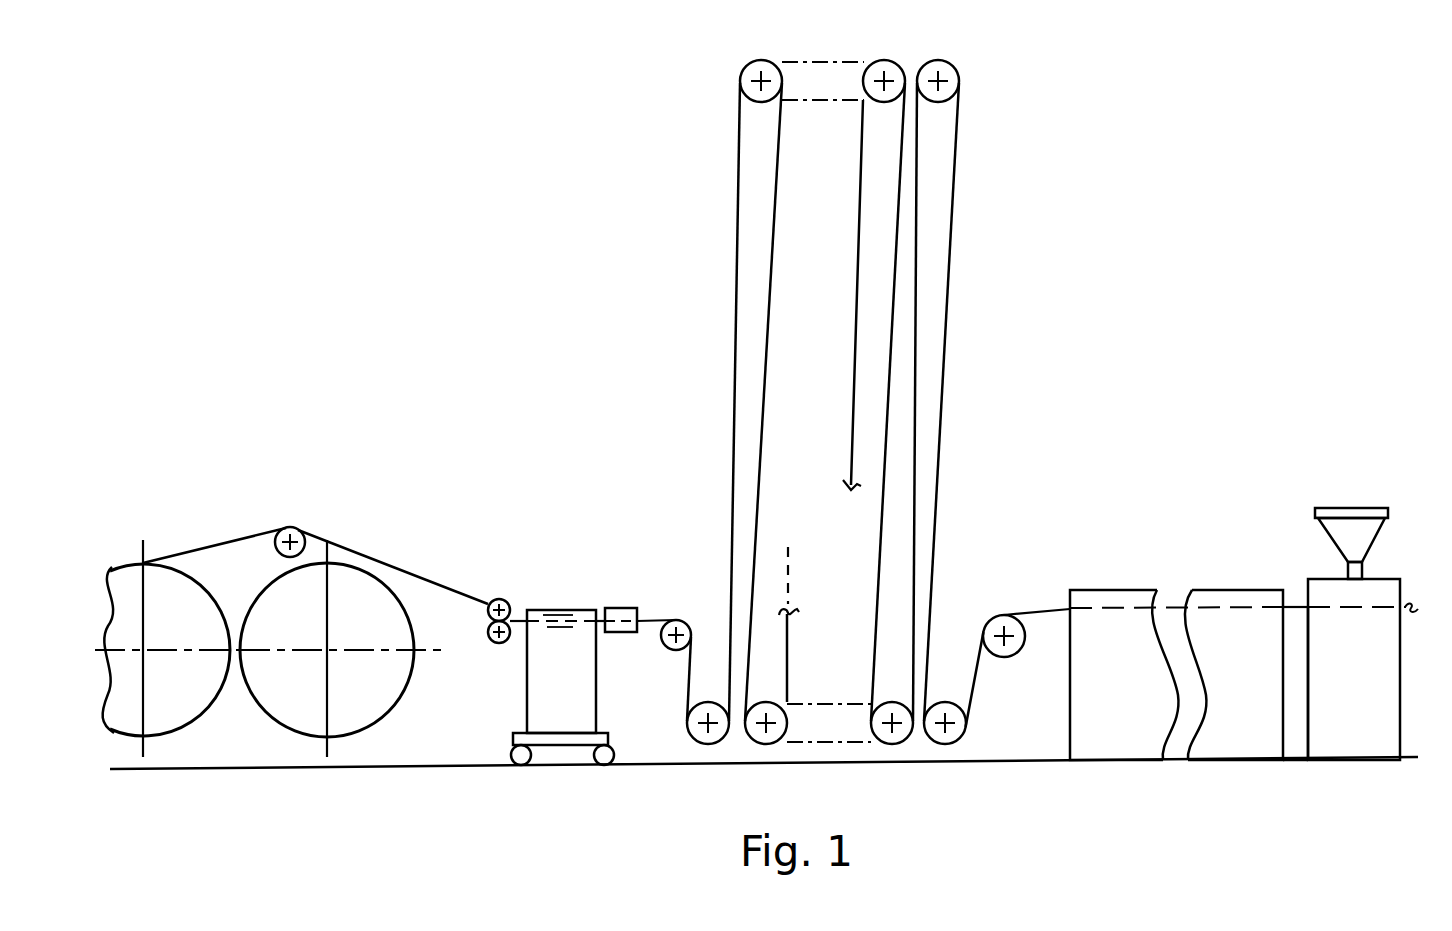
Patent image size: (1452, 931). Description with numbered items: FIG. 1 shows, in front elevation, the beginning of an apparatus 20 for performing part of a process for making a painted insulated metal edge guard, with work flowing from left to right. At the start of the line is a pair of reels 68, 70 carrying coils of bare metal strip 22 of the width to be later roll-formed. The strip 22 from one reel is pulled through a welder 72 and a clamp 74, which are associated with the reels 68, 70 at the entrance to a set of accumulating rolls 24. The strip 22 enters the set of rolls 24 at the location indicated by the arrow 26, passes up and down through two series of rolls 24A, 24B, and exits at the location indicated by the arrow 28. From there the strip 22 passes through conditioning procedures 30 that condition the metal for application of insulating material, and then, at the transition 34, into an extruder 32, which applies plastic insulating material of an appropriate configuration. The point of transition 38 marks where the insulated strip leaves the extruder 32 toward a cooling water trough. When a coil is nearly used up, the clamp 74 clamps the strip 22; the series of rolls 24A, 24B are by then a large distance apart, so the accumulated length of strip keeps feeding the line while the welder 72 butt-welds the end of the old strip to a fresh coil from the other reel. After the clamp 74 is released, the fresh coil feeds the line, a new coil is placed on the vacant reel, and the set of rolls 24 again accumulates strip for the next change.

The apparatus 20 is at (1128, 281).
The metal strip 22 is at (648, 620).
The set of accumulating rolls 24 is at (978, 280).
The series of rolls 24A is at (981, 732).
The series of rolls 24B is at (973, 77).
The arrow 26 is at (660, 627).
The arrow 28 is at (1038, 612).
The conditioning procedures 30 is at (1125, 590).
The extruder 32 is at (1340, 507).
The transition 34 is at (1297, 607).
The point of transition 38 is at (1402, 607).
The reel 68 is at (392, 707).
The reel 70 is at (197, 716).
The welder 72 is at (545, 608).
The clamp 74 is at (615, 608).